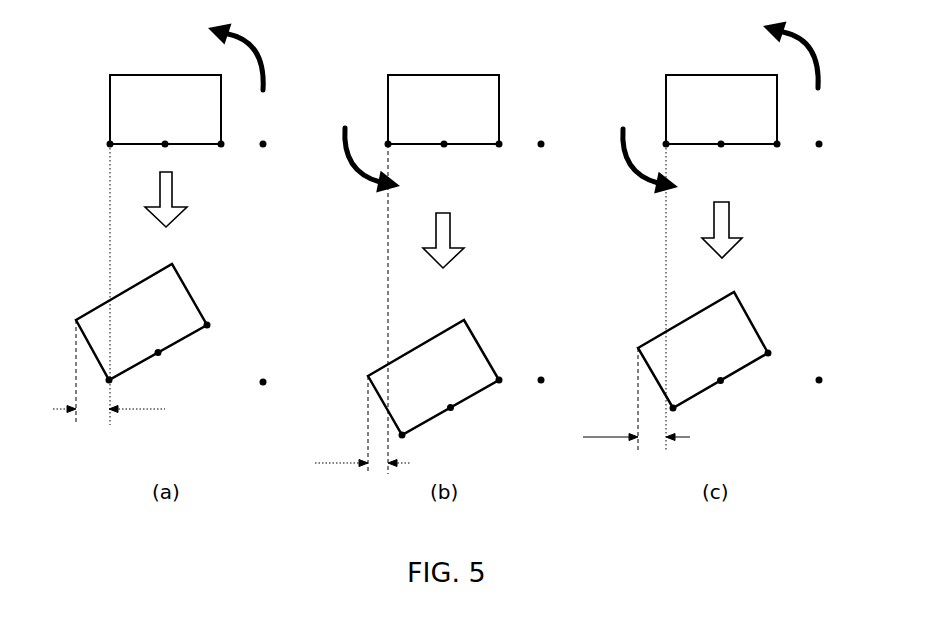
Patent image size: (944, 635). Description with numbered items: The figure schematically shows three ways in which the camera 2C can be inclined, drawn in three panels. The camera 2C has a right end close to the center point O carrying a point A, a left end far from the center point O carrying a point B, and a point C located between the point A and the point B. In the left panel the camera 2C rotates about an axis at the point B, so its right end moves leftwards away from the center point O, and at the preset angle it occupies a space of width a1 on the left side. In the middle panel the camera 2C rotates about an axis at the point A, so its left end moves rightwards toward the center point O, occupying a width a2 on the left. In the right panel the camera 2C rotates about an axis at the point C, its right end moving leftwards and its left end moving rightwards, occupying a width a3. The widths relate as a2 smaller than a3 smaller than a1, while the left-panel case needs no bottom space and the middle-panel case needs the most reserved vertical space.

The camera 2C is at (138, 89).
The point A is at (502, 262).
The point B is at (390, 296).
The point C is at (446, 288).
The center point O is at (552, 272).
The width a1 is at (109, 399).
The width a2 is at (362, 453).
The width a3 is at (636, 426).